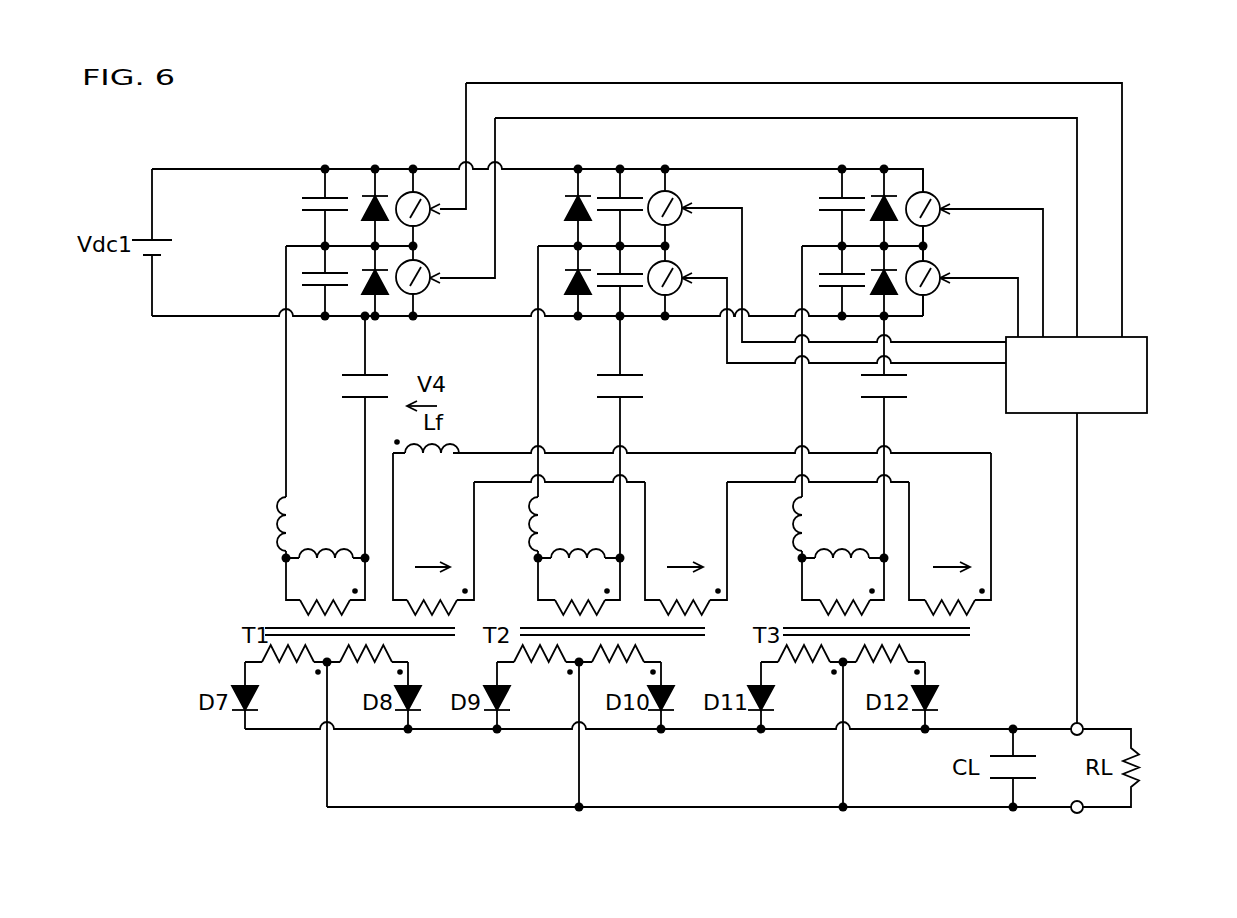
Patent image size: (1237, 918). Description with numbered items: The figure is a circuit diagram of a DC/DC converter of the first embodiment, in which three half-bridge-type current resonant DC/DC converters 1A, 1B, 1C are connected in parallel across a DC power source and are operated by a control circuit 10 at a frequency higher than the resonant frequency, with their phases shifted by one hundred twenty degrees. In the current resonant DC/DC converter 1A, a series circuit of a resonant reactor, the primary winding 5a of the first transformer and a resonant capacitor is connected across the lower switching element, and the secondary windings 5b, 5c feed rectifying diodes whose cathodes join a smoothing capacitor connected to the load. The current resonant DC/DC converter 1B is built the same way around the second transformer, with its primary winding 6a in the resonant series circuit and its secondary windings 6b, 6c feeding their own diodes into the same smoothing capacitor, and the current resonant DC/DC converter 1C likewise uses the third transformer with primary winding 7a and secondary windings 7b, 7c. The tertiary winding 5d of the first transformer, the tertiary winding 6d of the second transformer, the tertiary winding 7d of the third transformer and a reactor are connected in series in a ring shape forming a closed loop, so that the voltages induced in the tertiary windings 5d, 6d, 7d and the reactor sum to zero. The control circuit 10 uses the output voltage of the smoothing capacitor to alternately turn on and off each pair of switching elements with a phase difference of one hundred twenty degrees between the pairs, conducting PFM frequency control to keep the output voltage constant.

The current resonant DC/DC converter 1A is at (347, 106).
The current resonant DC/DC converter 1B is at (627, 74).
The current resonant DC/DC converter 1C is at (887, 74).
The control circuit 10 is at (1148, 385).
The primary winding 5a is at (300, 590).
The secondary winding 5b is at (264, 673).
The secondary winding 5c is at (352, 697).
The tertiary winding 5d is at (460, 598).
The primary winding 6a is at (533, 590).
The secondary winding 6b is at (528, 700).
The secondary winding 6c is at (597, 698).
The tertiary winding 6d is at (712, 598).
The primary winding 7a is at (804, 590).
The secondary winding 7b is at (797, 700).
The secondary winding 7c is at (887, 718).
The tertiary winding 7d is at (970, 586).